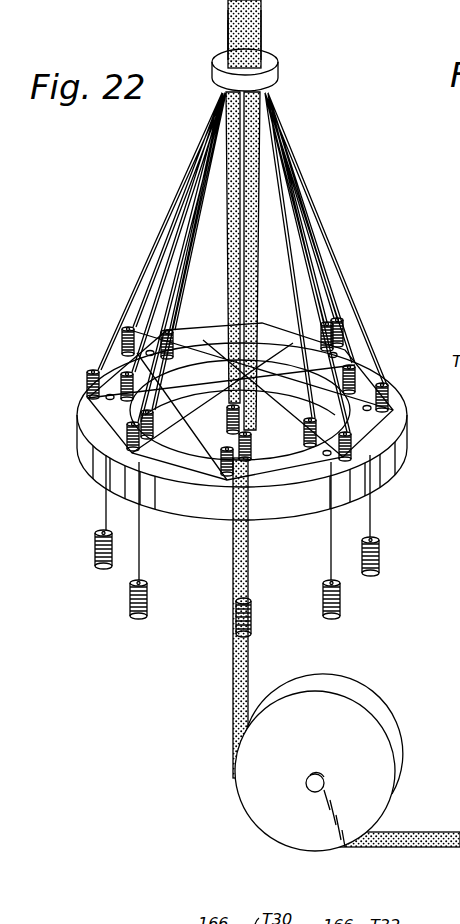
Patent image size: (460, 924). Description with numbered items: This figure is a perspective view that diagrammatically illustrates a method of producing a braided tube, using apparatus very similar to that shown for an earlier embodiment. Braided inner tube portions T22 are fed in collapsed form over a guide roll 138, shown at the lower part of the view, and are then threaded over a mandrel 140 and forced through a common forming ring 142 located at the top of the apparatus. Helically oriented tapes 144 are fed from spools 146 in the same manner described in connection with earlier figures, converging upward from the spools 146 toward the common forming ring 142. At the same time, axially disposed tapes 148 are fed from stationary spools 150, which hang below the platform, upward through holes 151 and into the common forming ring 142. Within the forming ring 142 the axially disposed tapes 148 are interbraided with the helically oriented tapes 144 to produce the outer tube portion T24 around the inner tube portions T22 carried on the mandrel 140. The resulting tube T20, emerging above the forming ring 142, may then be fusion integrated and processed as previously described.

The mandrel 140 is at (257, 1).
The outer tube portion T24 is at (263, 37).
The tube T20 is at (218, 27).
The common forming ring 142 is at (279, 72).
The helically oriented tapes 144 is at (318, 207).
The axially disposed tapes 148 is at (312, 238).
The holes 151 is at (407, 432).
The spools 146 is at (340, 325).
The stationary spools 150 is at (378, 551).
The braided inner tube portions T22 is at (425, 830).
The guide roll 138 is at (364, 728).